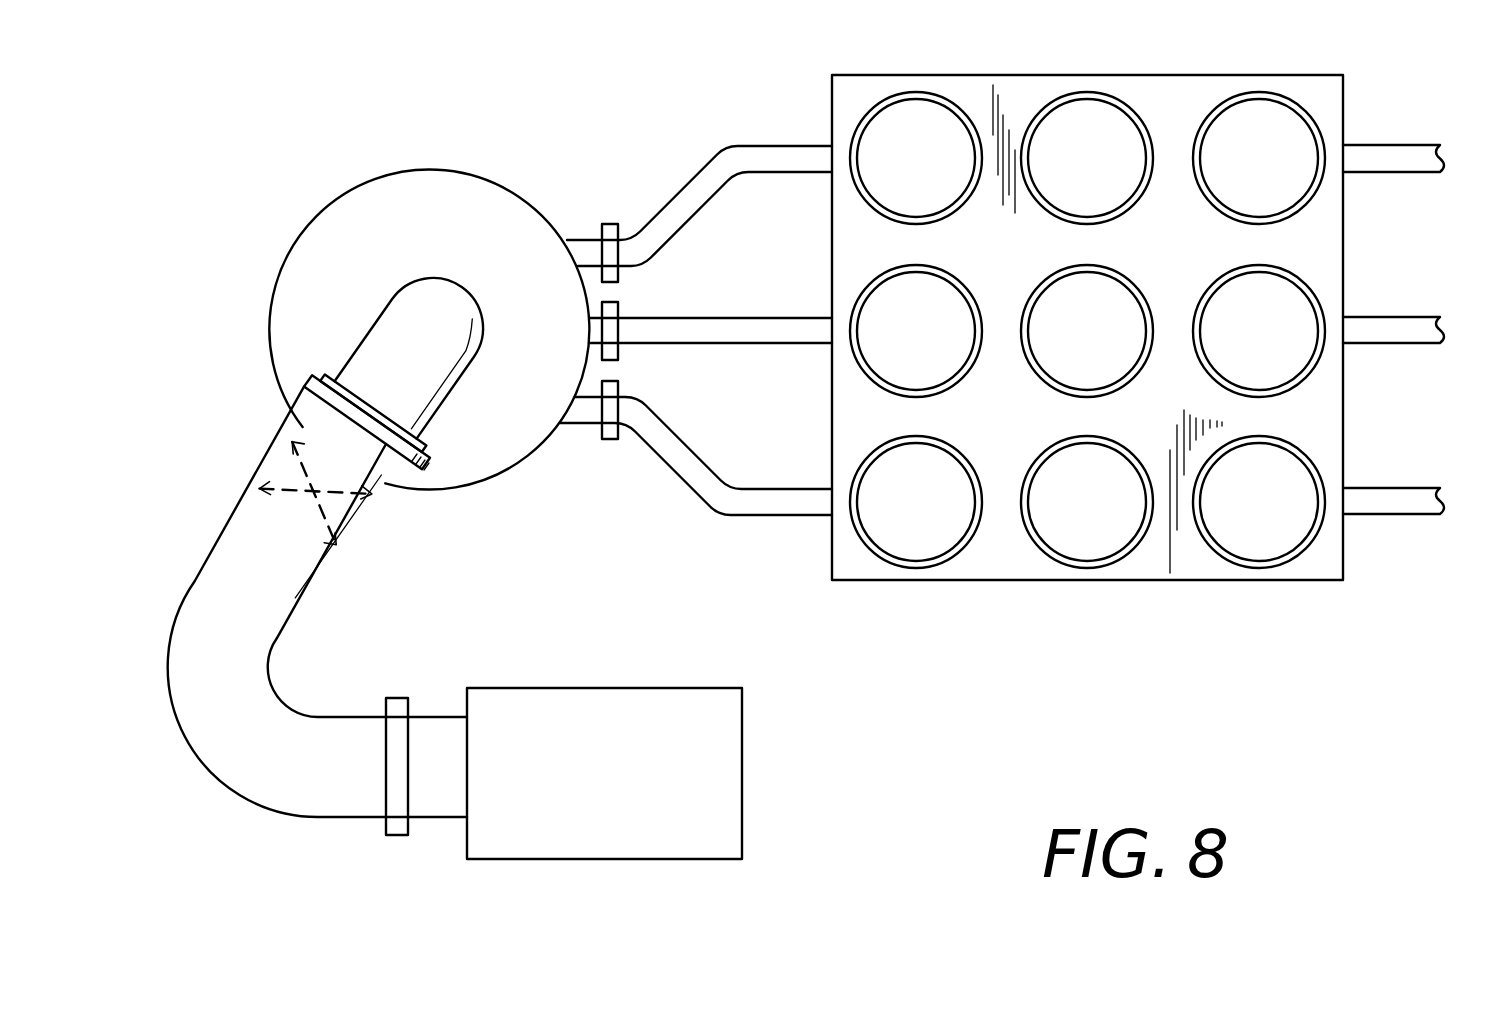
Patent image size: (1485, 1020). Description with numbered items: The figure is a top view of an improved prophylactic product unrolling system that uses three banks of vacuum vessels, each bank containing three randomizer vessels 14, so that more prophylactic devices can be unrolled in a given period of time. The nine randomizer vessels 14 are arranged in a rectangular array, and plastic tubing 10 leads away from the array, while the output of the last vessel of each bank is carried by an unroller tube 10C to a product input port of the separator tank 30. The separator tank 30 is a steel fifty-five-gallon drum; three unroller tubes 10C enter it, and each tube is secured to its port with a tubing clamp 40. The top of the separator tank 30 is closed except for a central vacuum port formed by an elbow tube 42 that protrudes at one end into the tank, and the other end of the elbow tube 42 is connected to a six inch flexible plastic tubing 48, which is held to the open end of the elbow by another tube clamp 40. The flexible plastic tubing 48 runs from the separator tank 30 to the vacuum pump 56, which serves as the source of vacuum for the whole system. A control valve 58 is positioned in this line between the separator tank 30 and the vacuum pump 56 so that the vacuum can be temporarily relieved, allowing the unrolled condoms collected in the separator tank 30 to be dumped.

The separator tank 30 is at (408, 168).
The tubing clamp 40 is at (311, 376).
The elbow tube 42 is at (442, 403).
The flexible plastic tubing 48 is at (307, 582).
The control valve 58 is at (360, 510).
The vacuum pump 56 is at (563, 688).
The unroller tube 10C is at (757, 146).
The randomizer vessel 14 is at (900, 172).
The plastic tubing 10 is at (1362, 145).